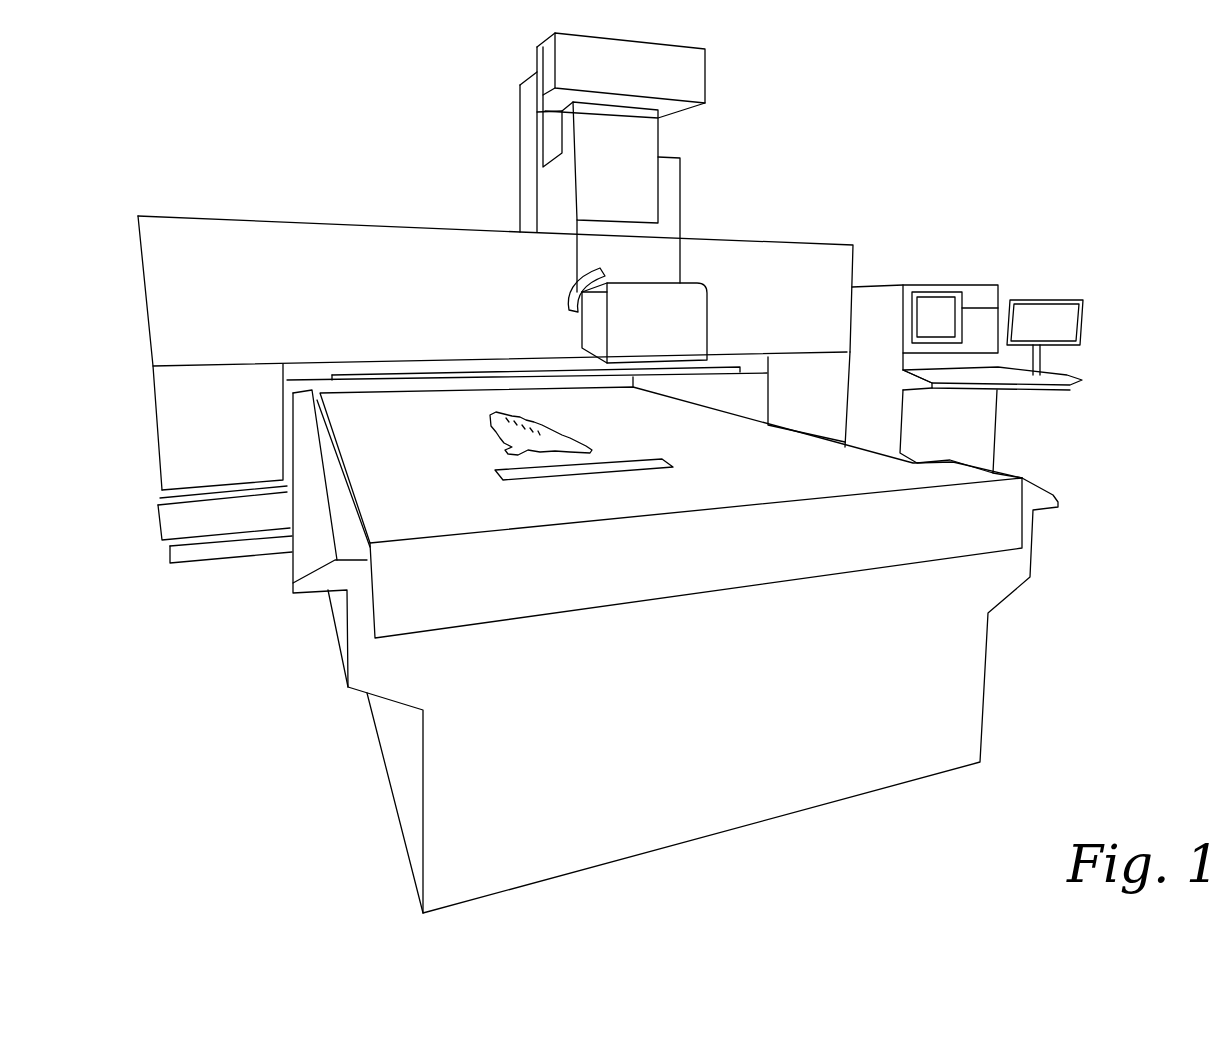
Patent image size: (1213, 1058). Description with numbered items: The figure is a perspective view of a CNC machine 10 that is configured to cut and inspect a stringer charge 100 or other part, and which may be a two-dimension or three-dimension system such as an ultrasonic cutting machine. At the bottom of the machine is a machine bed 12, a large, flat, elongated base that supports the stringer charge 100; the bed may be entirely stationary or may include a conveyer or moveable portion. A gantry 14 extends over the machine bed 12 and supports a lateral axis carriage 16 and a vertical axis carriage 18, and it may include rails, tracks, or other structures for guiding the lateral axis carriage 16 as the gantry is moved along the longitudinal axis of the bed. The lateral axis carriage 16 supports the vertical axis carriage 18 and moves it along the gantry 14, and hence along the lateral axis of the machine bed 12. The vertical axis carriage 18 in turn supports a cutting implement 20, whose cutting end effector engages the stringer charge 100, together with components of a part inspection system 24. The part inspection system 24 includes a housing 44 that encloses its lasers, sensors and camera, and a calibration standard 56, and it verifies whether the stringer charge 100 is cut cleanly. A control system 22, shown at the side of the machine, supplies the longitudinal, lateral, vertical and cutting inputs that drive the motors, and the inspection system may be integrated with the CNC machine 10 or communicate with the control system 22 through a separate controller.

The CNC machine 10 is at (334, 116).
The machine bed 12 is at (405, 510).
The gantry 14 is at (252, 211).
The lateral axis carriage 16 is at (504, 87).
The vertical axis carriage 18 is at (693, 137).
The cutting implement 20 is at (653, 383).
The control system 22 is at (1062, 275).
The part inspection system 24 is at (719, 288).
The housing 44 is at (688, 330).
The calibration standard 56 is at (675, 479).
The stringer charge 100 is at (485, 440).